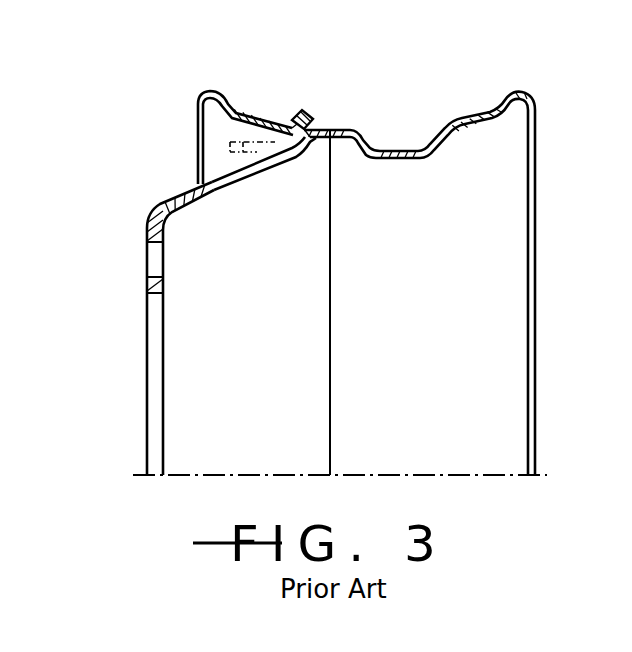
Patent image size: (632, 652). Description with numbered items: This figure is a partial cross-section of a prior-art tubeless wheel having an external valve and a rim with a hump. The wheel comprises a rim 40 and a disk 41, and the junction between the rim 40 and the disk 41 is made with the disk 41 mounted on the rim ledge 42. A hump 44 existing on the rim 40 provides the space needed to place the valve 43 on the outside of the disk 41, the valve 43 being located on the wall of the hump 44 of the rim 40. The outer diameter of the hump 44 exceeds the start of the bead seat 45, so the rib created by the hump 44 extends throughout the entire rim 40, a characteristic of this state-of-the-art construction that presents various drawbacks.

The rim 40 is at (455, 132).
The disk 41 is at (145, 285).
The rim ledge 42 is at (325, 130).
The valve 43 is at (213, 141).
The hump 44 is at (295, 118).
The bead seat 45 is at (250, 118).